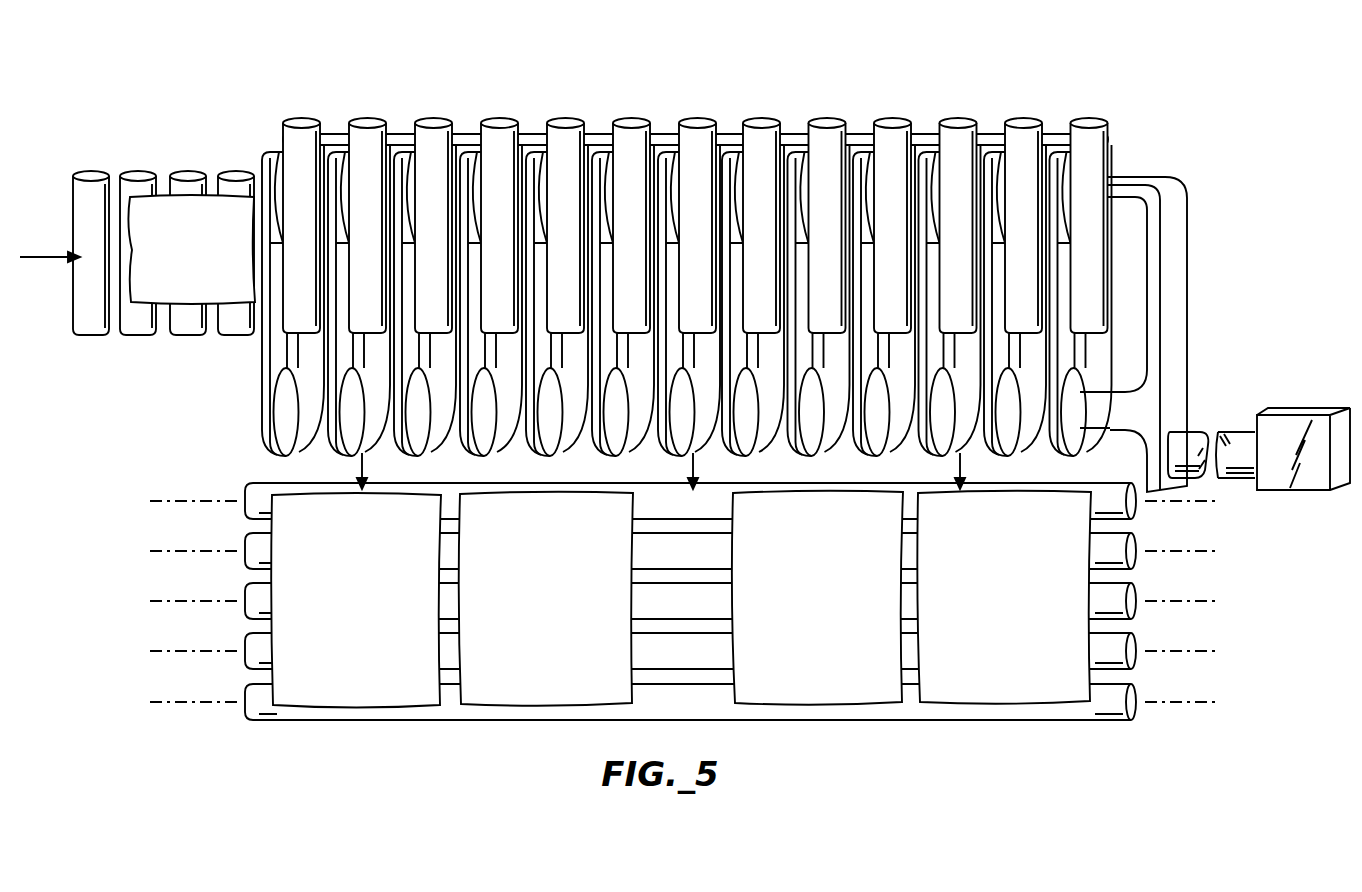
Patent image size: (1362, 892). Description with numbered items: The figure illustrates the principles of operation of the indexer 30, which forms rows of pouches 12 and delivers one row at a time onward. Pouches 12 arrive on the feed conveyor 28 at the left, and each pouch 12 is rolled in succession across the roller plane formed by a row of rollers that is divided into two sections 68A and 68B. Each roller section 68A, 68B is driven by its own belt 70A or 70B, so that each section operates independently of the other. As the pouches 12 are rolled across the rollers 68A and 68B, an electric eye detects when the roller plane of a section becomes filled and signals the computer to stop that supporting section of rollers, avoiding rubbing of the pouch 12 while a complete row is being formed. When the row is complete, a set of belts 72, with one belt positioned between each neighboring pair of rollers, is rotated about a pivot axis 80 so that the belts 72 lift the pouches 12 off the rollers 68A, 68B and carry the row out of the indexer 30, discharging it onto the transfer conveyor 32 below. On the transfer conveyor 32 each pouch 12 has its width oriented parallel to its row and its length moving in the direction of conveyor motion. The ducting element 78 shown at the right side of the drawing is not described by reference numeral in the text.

The pouch 12 is at (190, 217).
The feed conveyor 28 is at (84, 374).
The indexer 30 is at (208, 120).
The transfer conveyor 32 is at (140, 553).
The roller section 68A is at (505, 181).
The roller section 68B is at (918, 179).
The belt 70A is at (283, 88).
The belt 70B is at (745, 88).
The belts 72 is at (465, 410).
The vacuum duct 78 is at (1147, 200).
The pivot axis 80 is at (1197, 432).